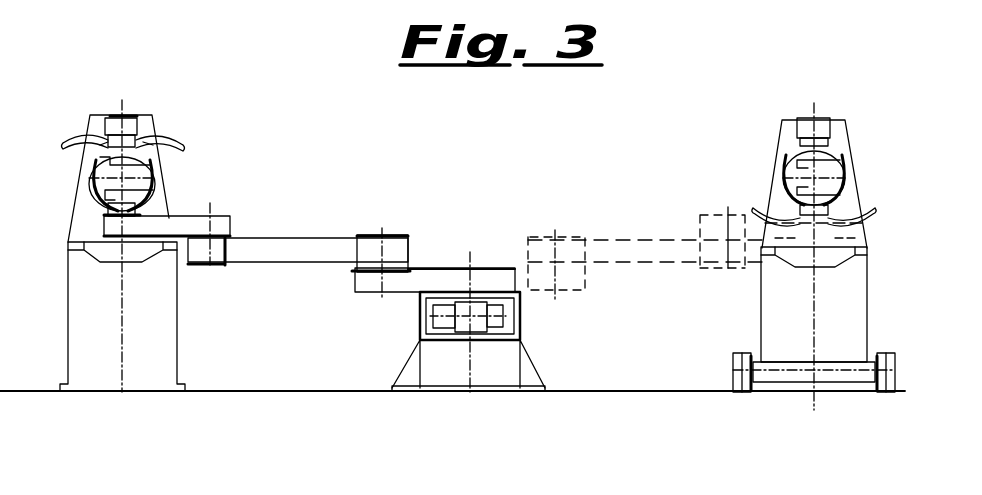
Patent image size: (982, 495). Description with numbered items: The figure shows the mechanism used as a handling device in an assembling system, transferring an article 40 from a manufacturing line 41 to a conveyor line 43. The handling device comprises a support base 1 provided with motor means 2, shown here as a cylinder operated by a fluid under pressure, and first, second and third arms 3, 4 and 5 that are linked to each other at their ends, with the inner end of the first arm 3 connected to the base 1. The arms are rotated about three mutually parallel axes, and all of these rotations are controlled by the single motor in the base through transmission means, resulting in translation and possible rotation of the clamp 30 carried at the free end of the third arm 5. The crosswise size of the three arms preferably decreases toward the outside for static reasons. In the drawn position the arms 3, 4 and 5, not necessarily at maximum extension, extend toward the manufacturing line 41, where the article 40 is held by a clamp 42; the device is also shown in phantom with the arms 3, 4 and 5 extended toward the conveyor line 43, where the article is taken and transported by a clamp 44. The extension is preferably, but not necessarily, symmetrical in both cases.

The support base 1 is at (493, 382).
The motor means 2 is at (510, 323).
The first arm 3 is at (398, 283).
The second arm 4 is at (318, 246).
The third arm 5 is at (190, 216).
The clamp 30 is at (160, 180).
The article 40 is at (103, 162).
The manufacturing line 41 is at (165, 341).
The clamp 42 is at (172, 140).
The conveyor line 43 is at (771, 315).
The clamp 44 is at (783, 160).